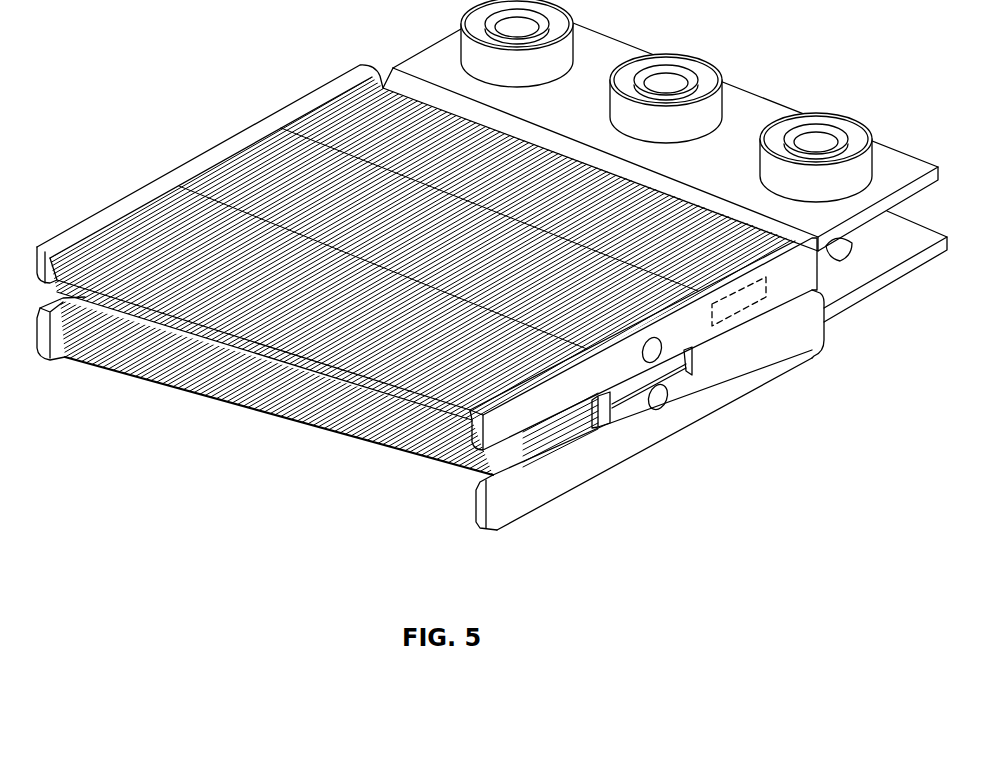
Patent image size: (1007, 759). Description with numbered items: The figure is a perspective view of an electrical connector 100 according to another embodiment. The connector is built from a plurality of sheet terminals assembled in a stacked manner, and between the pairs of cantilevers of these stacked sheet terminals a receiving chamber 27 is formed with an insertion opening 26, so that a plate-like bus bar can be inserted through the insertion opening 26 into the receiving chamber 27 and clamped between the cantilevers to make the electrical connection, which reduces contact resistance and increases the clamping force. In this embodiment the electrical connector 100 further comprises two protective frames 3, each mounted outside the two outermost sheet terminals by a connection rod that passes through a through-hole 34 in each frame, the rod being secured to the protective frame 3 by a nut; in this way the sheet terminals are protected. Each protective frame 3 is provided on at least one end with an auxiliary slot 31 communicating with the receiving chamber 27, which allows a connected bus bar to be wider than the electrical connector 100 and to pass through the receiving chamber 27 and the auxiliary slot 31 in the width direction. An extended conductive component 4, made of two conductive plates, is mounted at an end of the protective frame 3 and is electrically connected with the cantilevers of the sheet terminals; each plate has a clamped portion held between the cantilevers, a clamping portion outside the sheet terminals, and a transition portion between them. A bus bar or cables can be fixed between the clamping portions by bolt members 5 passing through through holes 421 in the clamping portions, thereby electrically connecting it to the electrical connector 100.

The electrical connector 100 is at (315, 185).
The bolt member 5 is at (860, 135).
The through hole 421 is at (838, 253).
The extended conductive component 4 is at (877, 262).
The protective frame 3 is at (647, 386).
The through-hole 34 is at (660, 400).
The auxiliary slot 31 is at (610, 425).
The receiving chamber 27 is at (540, 450).
The insertion opening 26 is at (297, 402).